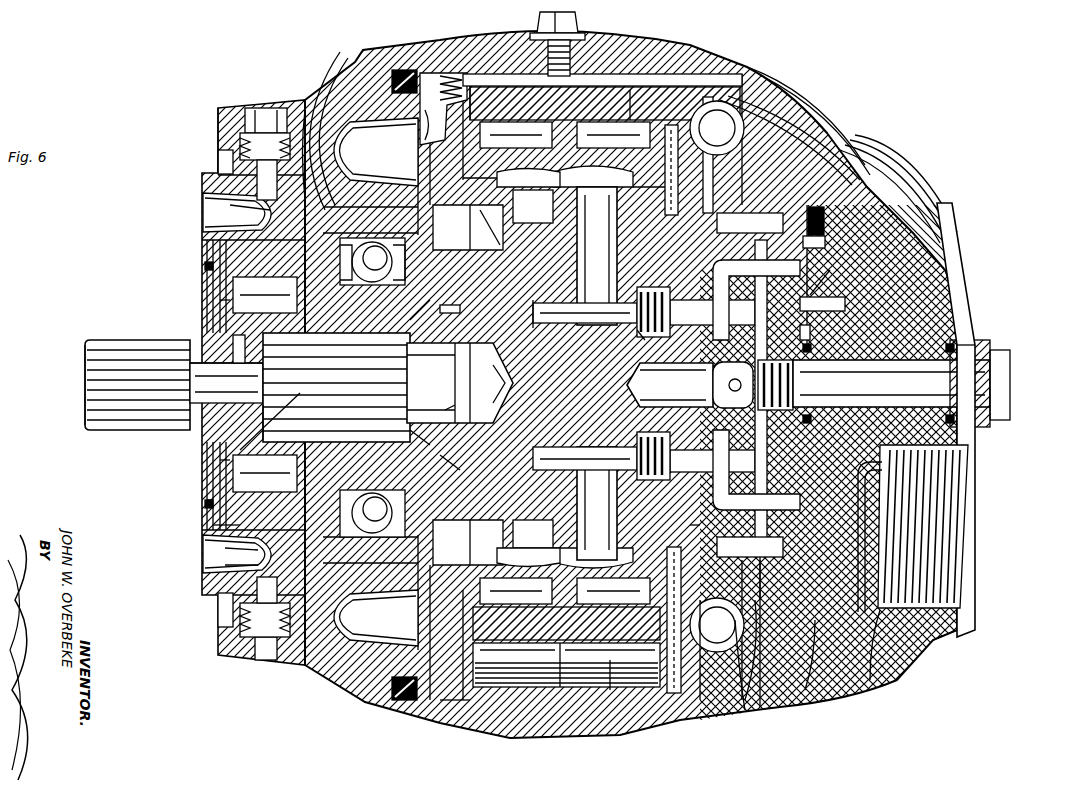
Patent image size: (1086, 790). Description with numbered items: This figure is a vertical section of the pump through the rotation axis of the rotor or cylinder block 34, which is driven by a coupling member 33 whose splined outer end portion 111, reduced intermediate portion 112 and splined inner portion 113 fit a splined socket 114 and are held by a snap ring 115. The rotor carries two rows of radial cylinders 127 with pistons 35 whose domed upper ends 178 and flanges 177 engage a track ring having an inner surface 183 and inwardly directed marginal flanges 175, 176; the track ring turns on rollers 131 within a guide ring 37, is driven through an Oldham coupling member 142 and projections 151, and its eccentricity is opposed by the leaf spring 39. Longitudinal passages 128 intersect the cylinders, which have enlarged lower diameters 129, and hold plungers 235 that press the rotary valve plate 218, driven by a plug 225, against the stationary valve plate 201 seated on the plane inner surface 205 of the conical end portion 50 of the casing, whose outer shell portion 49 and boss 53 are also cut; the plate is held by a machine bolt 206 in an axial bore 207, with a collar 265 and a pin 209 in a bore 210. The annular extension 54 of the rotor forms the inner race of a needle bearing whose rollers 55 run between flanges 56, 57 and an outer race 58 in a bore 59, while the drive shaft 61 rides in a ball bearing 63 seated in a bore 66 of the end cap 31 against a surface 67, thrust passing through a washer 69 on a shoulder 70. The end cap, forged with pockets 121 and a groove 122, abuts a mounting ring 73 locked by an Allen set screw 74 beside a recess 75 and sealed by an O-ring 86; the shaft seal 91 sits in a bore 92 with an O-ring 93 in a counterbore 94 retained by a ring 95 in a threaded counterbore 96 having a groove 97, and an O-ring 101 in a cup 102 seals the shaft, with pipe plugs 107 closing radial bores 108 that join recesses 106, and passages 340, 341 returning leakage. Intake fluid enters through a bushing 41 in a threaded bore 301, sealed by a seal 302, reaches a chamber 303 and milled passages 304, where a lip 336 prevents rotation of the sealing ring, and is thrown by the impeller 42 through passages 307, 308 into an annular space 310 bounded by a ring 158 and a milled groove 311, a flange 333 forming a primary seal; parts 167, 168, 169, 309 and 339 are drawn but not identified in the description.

The end cap 31 is at (365, 85).
The coupling member 33 is at (80, 389).
The rotor 34 is at (550, 388).
The pistons 35 is at (565, 367).
The guide ring 37 is at (632, 90).
The control spring 39 is at (612, 720).
The bushing 41 is at (955, 638).
The centrifugal impeller 42 is at (695, 722).
The outer shell portion 49 is at (670, 125).
The conical end portion 50 is at (842, 150).
The boss 53 is at (915, 665).
The annular extension 54 is at (756, 385).
The rollers 55 is at (830, 175).
The flange 56 is at (870, 170).
The flange 57 is at (805, 160).
The outer race 58 is at (855, 142).
The bore 59 is at (812, 700).
The shaft extension 61 is at (255, 438).
The ball bearing 63 is at (372, 387).
The bore 66 is at (307, 120).
The surface 67 is at (230, 208).
The washer 69 is at (322, 706).
The shoulder 70 is at (460, 460).
The mounting ring 73 is at (472, 85).
The Allen set screw 74 is at (445, 75).
The recess 75 is at (428, 110).
The O-ring seal 86 is at (400, 70).
The rotary shaft seal 91 is at (235, 468).
The bore 92 is at (208, 490).
The O-ring 93 is at (222, 549).
The counterbore 94 is at (225, 566).
The retainer ring 95 is at (210, 522).
The threaded counterbore 96 is at (214, 300).
The groove 97 is at (205, 258).
The O-ring 101 is at (333, 320).
The cup 102 is at (293, 315).
The recesses 106 is at (203, 210).
The pipe plugs 107 is at (255, 108).
The radial bores 108 is at (218, 156).
The splined outer end portion 111 is at (95, 338).
The reduced intermediate portion 112 is at (205, 362).
The splined inner portion 113 is at (232, 452).
The splined socket 114 is at (434, 438).
The snap ring 115 is at (205, 360).
The pockets 121 is at (376, 382).
The circumferential groove 122 is at (258, 180).
The cylinder bores 127 is at (644, 380).
The passages 128 is at (555, 325).
The enlarged diameter 129 is at (608, 330).
The rollers 131 is at (510, 128).
The intermediate coupling member 142 is at (471, 231).
The projections 151 is at (468, 385).
The ring 158 is at (730, 102).
The cam 167 is at (490, 384).
The cam block 168 is at (460, 383).
The bore 169 is at (432, 408).
The marginal flange 175 is at (517, 655).
The marginal flange 176 is at (610, 655).
The piston flanges 177 is at (760, 70).
The domed upper ends 178 is at (706, 97).
The inner surface 183 is at (548, 75).
The stationary valve plate 201 is at (826, 244).
The plane inner surface 205 is at (812, 331).
The machine bolt 206 is at (1012, 368).
The axial bore 207 is at (880, 408).
The pin 209 is at (822, 300).
The bore 210 is at (846, 306).
The rotary valve plate 218 is at (824, 216).
The plug 225 is at (690, 385).
The plungers 235 is at (653, 367).
The collar 265 is at (980, 340).
The threaded bore 301 is at (905, 665).
The seal 302 is at (950, 640).
The chamber 303 is at (930, 500).
The milled passages 304 is at (870, 527).
The impeller passages 307 is at (690, 526).
The passages 308 is at (725, 594).
The passage 309 is at (672, 722).
The annular space 310 is at (740, 105).
The milled groove 311 is at (755, 705).
The flange 333 is at (738, 715).
The lip 336 is at (840, 600).
The cap 339 is at (586, 572).
The passages 340 is at (318, 100).
The passage 341 is at (440, 715).